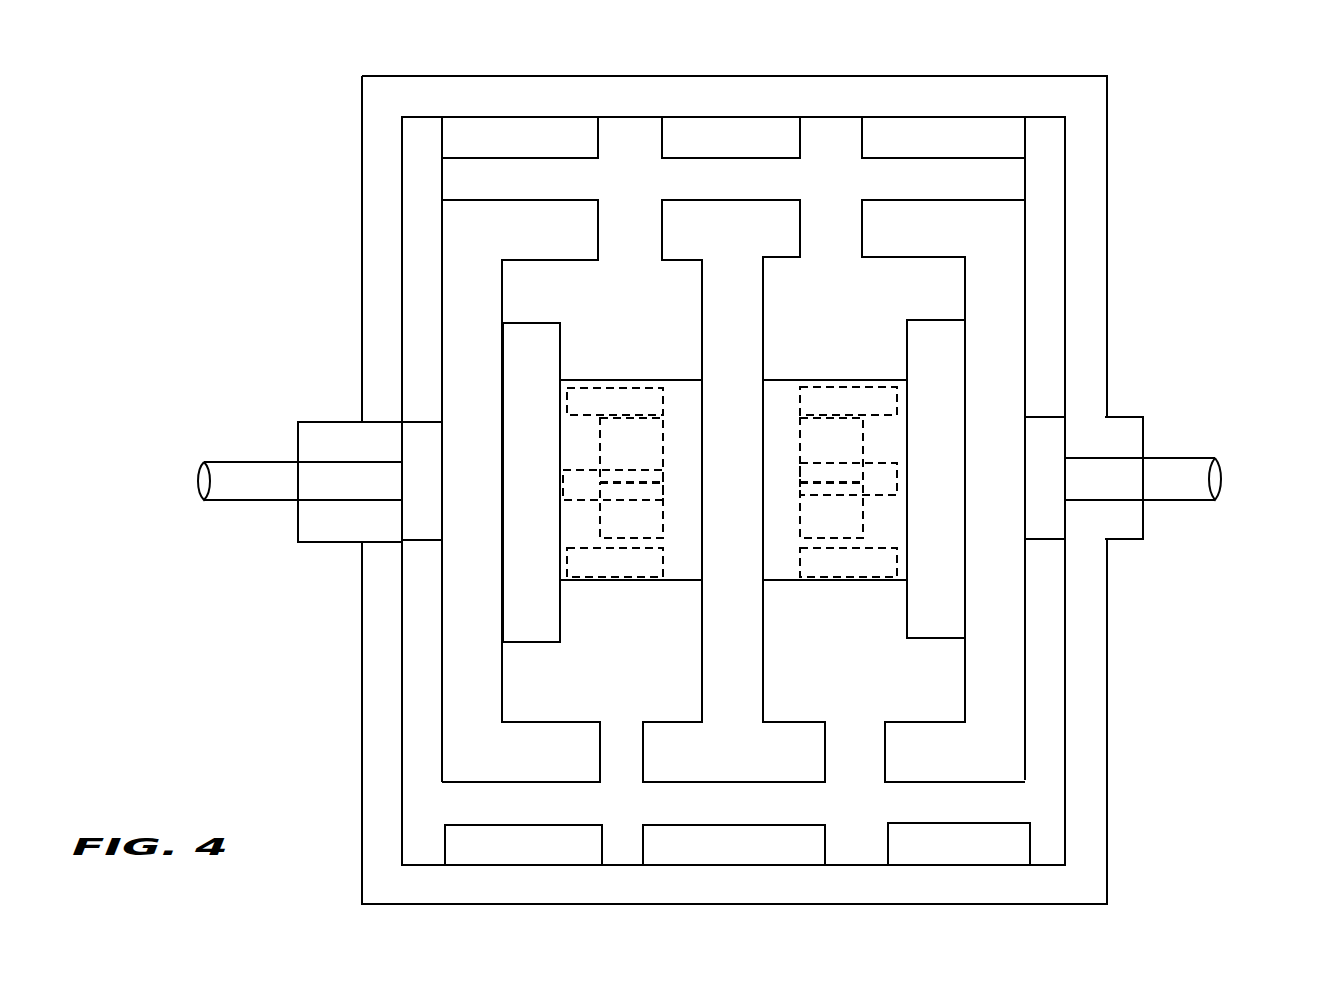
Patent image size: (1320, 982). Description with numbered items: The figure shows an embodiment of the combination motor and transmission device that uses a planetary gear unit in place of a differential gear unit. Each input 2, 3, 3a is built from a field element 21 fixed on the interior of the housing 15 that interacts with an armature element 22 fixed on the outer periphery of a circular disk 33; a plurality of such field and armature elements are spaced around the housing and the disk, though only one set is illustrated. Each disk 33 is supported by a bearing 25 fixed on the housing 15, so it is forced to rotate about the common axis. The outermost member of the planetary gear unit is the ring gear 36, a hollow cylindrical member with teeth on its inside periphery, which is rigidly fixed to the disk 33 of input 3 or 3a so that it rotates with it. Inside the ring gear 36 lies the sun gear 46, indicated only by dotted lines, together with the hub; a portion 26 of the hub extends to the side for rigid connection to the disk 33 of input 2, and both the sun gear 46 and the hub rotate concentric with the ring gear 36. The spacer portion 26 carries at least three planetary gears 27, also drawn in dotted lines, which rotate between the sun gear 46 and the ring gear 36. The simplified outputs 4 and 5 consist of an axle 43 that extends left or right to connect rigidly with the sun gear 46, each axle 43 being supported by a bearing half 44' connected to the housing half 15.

The input 2 is at (806, 62).
The input 3 is at (909, 62).
The input 3a is at (462, 63).
The output 4 is at (183, 490).
The output 5 is at (1250, 479).
The housing 15 is at (1107, 128).
The field element 21 is at (660, 137).
The armature element 22 is at (662, 255).
The bearing 25 is at (418, 422).
The hub portion 26 is at (532, 642).
The planetary gears 27 is at (577, 407).
The circular disk 33 is at (453, 303).
The ring gear 36 is at (635, 580).
The axle 43 is at (243, 462).
The bearing half 44' is at (333, 511).
The sun gear 46 is at (623, 517).